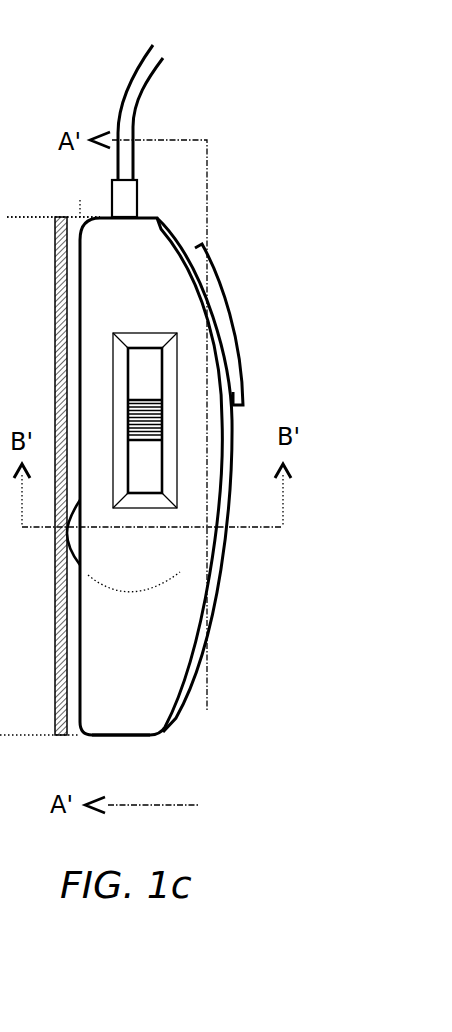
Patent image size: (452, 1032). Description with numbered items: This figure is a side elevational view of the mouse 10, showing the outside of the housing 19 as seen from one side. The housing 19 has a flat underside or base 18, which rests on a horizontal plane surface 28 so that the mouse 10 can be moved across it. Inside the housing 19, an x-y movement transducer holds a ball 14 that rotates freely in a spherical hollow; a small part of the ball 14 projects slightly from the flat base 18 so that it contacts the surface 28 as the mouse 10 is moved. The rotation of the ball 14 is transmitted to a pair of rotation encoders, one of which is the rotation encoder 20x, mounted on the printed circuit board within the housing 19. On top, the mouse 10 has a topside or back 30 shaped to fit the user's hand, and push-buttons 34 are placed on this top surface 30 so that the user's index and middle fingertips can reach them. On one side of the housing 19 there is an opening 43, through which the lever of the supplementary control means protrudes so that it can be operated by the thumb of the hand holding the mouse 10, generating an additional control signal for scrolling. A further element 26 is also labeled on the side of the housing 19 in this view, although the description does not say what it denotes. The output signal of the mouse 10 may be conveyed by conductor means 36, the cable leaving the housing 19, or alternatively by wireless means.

The mouse 10 is at (185, 727).
The ball 14 is at (178, 552).
The flat underside or base 18 is at (70, 275).
The housing 19 is at (97, 686).
The rotation encoder 20x is at (16, 376).
The button 26 is at (67, 563).
The horizontal plane surface 28 is at (53, 230).
The topside or back 30 is at (213, 648).
The push-buttons 34 is at (238, 310).
The conductor means 36 is at (118, 90).
The opening 43 is at (192, 400).